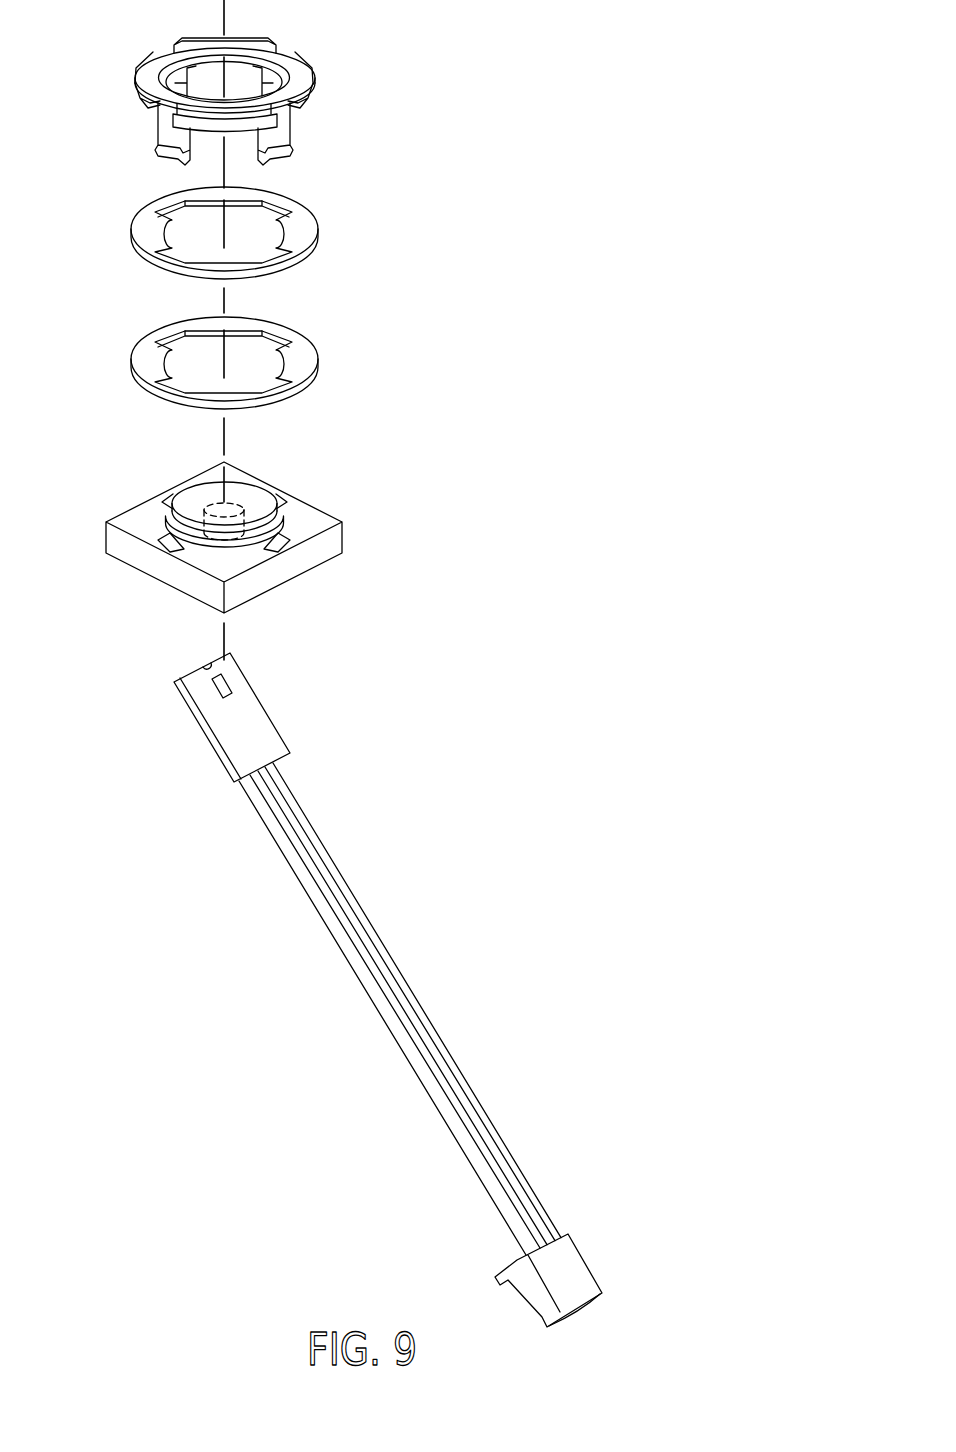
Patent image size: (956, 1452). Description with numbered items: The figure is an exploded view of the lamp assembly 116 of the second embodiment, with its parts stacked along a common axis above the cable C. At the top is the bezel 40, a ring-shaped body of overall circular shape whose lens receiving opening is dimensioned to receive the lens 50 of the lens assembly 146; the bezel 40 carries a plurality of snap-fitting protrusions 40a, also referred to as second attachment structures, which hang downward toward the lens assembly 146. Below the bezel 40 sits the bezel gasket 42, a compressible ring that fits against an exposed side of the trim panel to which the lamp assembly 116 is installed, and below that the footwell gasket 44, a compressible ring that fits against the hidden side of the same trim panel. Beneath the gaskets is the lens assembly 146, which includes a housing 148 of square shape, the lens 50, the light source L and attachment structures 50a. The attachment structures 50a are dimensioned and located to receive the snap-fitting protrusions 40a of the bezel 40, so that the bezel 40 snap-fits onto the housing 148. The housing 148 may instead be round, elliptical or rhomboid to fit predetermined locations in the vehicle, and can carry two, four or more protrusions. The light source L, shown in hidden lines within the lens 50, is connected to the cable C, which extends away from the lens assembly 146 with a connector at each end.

The bezel 40 is at (303, 72).
The snap-fitting protrusions 40a is at (265, 83).
The bezel gasket 42 is at (310, 212).
The footwell gasket 44 is at (312, 341).
The lens 50 is at (193, 498).
The attachment structures 50a is at (281, 501).
The lamp assembly 116 is at (545, 215).
The lens assembly 146 is at (252, 524).
The housing 148 is at (303, 553).
The light source L is at (250, 503).
The cable C is at (365, 913).